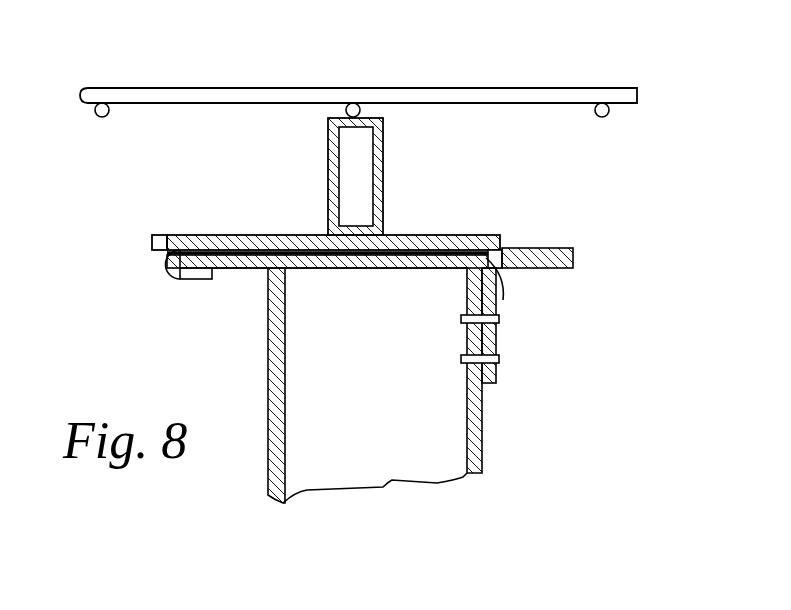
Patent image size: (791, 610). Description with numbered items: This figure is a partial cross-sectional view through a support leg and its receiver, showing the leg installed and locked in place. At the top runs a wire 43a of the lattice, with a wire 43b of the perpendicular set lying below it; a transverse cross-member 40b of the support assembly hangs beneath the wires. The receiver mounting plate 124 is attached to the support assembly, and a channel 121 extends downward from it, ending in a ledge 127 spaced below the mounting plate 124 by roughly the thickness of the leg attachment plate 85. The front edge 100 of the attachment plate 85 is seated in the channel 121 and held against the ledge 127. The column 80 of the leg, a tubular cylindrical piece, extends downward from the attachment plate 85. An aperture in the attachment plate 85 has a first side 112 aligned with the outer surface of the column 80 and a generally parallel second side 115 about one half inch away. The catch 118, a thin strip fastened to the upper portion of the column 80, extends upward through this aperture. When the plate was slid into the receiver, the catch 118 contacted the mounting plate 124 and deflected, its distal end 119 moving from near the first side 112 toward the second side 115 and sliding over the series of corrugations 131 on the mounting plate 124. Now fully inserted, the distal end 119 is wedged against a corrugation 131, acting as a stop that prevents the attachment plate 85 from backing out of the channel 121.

The wire 43a is at (490, 88).
The wire 43b is at (606, 117).
The transverse cross-member 40b is at (383, 153).
The receiver mounting plate 124 is at (210, 233).
The front edge 100 is at (160, 235).
The distal end 119 is at (505, 247).
The first side 112 is at (455, 262).
The corrugations 131 is at (500, 240).
The second side 115 is at (520, 266).
The channel 121 is at (163, 262).
The ledge 127 is at (197, 276).
The leg attachment plate 85 is at (313, 268).
The column 80 is at (268, 342).
The catch 118 is at (505, 300).